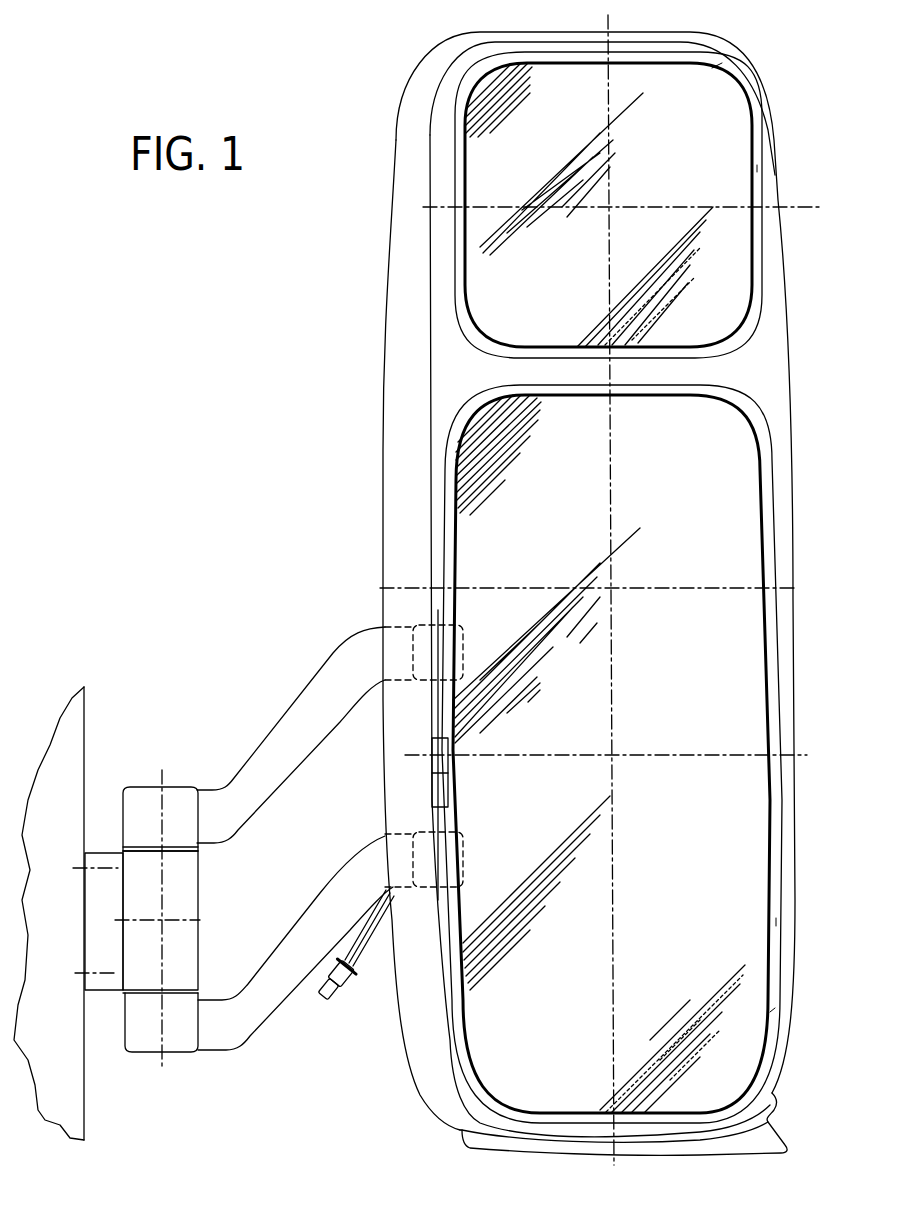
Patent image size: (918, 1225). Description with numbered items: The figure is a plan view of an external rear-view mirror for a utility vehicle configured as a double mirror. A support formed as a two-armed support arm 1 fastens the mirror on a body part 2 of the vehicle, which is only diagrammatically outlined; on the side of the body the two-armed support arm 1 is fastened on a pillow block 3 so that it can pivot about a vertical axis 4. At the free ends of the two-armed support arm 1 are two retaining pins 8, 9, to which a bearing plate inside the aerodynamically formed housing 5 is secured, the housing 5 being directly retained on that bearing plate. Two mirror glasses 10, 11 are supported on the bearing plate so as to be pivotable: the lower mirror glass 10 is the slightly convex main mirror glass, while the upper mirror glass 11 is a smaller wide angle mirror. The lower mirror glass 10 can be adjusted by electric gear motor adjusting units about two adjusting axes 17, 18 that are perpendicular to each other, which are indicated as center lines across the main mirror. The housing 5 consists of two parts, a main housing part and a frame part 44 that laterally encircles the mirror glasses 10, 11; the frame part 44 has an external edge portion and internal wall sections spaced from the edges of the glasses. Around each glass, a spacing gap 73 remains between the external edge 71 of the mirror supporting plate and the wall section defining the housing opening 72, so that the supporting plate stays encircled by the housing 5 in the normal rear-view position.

The two-armed support arm 1 is at (278, 721).
The body part 2 is at (65, 743).
The pillow block 3 is at (185, 893).
The vertical axis 4 is at (163, 1037).
The housing 5 is at (381, 375).
The retaining pin 8 is at (433, 708).
The retaining pin 9 is at (432, 806).
The lower mirror glass 10 is at (718, 643).
The upper mirror glass 11 is at (718, 229).
The adjusting axis 17 is at (617, 925).
The adjusting axis 18 is at (700, 750).
The frame part 44 is at (755, 368).
The external edge 71 is at (751, 127).
The housing opening 72 is at (721, 65).
The spacing gap 73 is at (757, 168).